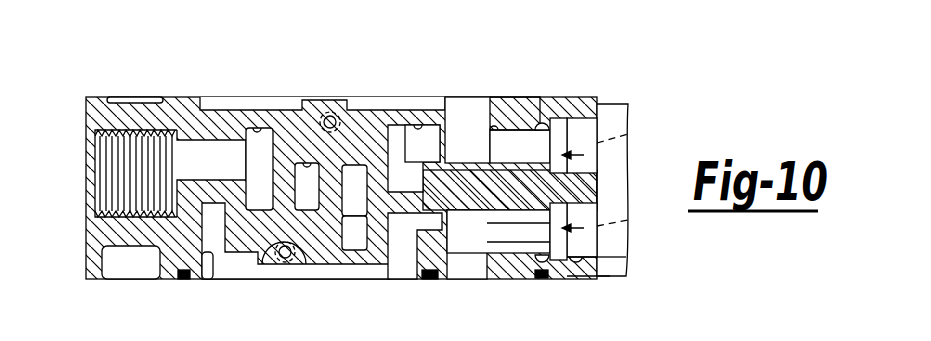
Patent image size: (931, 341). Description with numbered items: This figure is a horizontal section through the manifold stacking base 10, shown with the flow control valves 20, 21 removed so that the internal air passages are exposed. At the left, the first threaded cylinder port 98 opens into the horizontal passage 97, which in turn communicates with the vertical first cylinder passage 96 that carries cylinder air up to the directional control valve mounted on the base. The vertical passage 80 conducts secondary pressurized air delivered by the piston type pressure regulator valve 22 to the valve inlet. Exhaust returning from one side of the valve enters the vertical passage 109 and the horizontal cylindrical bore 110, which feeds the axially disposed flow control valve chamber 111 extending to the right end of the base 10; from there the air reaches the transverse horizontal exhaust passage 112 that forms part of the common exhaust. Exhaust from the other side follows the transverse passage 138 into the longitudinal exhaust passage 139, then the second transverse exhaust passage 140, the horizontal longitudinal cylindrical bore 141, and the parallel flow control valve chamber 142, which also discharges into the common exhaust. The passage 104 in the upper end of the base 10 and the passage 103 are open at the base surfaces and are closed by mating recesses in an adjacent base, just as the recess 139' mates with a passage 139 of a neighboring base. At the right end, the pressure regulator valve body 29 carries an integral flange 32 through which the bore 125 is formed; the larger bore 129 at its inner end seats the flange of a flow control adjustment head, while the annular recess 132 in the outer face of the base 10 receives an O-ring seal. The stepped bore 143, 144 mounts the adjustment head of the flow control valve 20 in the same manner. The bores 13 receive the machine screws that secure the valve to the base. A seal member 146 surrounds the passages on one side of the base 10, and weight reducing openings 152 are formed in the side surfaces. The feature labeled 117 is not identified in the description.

The manifold stacking base 10 is at (87, 264).
The piston type pressure regulator valve 22 is at (603, 101).
The first threaded cylinder port 98 is at (107, 136).
The horizontal passage 97 is at (187, 137).
The vertical first cylinder passage 96 is at (258, 127).
The vertical passage 80 is at (307, 162).
The second transverse exhaust passage 140 is at (388, 258).
The passage 103 is at (357, 236).
The recess 139' is at (322, 57).
The bores 13 is at (328, 113).
The vertical passage 109 is at (400, 127).
The horizontal cylindrical bore 110 is at (418, 126).
The transverse horizontal exhaust passage 112 is at (455, 97).
The flow control valve chamber 111 is at (493, 125).
The horizontal longitudinal cylindrical bore 141 is at (428, 245).
The annular recess 132 is at (541, 102).
The stepped bore 144 is at (597, 212).
The flow control valve chamber 142 is at (597, 234).
The bore 129 is at (566, 116).
The bore 125 is at (597, 133).
The flow control valve 21 is at (628, 134).
The flow control valve 20 is at (628, 220).
The stepped bore 143 is at (598, 250).
The pressure regulator valve body 29 is at (613, 266).
The integral flange 32 is at (599, 276).
The longitudinal exhaust passage 139 is at (296, 264).
The transverse passage 138 is at (212, 276).
The passage 104 is at (322, 262).
The weight reducing openings 152 is at (128, 97).
The seal member 146 is at (183, 279).
The passage 117 is at (514, 279).